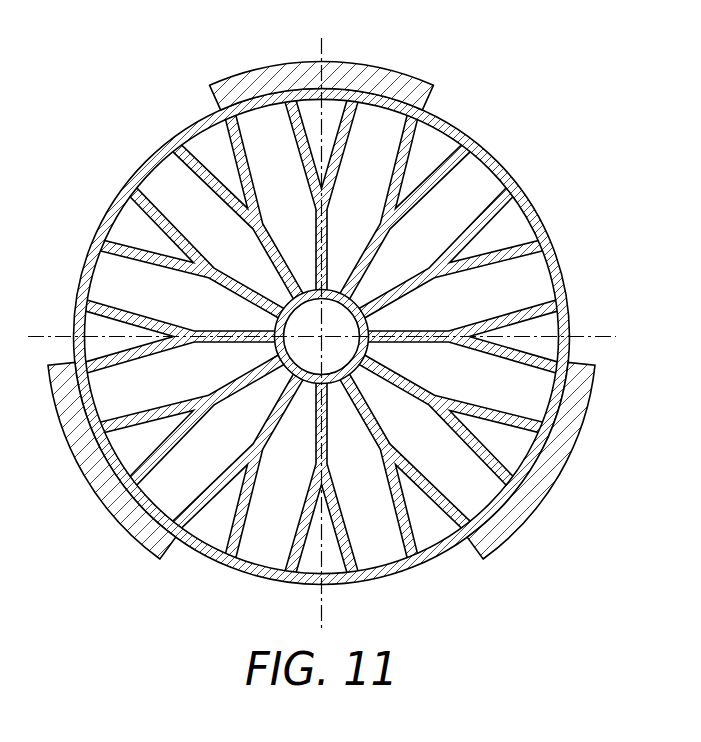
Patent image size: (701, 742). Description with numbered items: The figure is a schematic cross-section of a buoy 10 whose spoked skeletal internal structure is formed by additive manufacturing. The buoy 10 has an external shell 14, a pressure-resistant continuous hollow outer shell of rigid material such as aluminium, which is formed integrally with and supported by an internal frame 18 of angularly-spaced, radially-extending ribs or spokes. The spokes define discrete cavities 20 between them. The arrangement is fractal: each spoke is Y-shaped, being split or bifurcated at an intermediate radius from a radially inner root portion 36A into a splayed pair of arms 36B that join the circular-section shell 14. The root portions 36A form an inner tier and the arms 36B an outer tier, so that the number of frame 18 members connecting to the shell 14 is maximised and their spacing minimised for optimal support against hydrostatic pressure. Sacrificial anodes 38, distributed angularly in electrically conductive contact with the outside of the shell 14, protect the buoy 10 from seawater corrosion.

The buoy 10 is at (322, 333).
The external shell 14 is at (557, 265).
The frame 18 is at (424, 532).
The cavities 20 is at (313, 344).
The root portion 36A is at (423, 333).
The arms 36B is at (455, 164).
The sacrificial anodes 38 is at (413, 84).